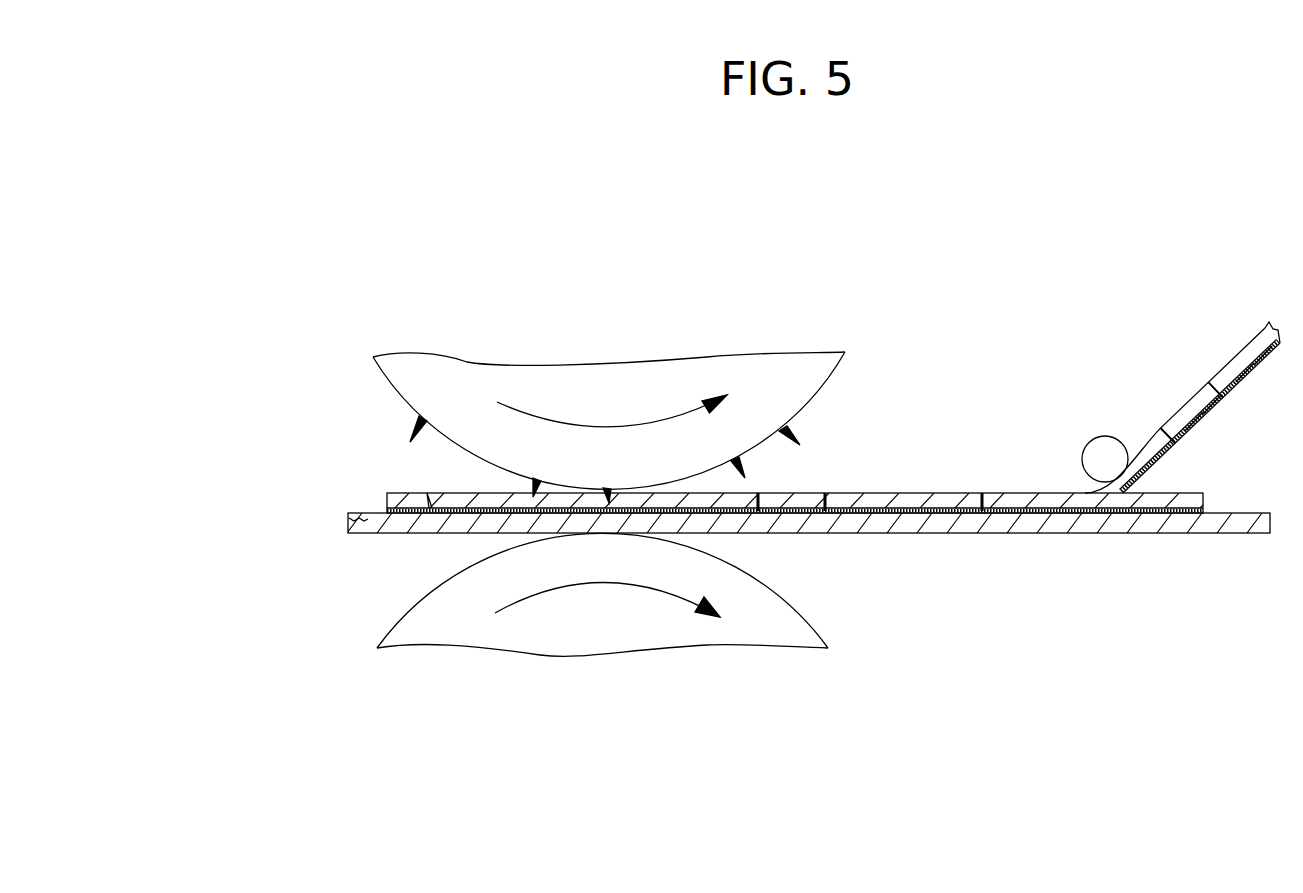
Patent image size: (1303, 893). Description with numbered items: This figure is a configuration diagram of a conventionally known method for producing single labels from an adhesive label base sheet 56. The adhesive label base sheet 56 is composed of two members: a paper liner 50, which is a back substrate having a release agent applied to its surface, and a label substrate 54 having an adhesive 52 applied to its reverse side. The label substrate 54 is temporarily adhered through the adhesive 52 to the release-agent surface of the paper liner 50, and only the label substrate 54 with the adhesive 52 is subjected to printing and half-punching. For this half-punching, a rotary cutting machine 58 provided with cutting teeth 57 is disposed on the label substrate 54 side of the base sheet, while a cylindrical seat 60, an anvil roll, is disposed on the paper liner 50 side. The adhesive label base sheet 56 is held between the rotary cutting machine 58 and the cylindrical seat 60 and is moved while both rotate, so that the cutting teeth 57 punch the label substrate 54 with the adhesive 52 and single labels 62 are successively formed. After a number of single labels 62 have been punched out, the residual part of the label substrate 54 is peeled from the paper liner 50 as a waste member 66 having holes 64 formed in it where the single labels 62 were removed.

The paper liner 50 is at (352, 520).
The adhesive 52 is at (407, 500).
The label substrate 54 is at (413, 493).
The adhesive label base sheet 56 is at (223, 368).
The cutting teeth 57 is at (427, 493).
The rotary cutting machine 58 is at (616, 387).
The cylindrical seat 60 is at (601, 623).
The single labels 62 is at (748, 500).
The holes 64 is at (1153, 457).
The waste member 66 is at (1185, 400).